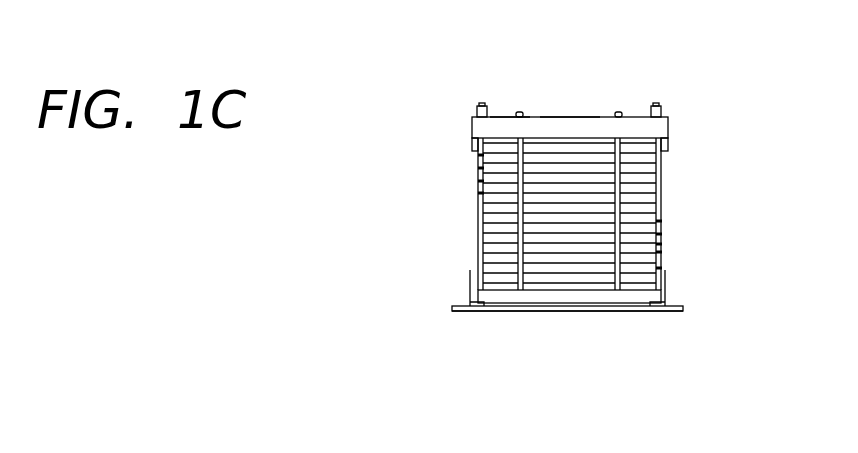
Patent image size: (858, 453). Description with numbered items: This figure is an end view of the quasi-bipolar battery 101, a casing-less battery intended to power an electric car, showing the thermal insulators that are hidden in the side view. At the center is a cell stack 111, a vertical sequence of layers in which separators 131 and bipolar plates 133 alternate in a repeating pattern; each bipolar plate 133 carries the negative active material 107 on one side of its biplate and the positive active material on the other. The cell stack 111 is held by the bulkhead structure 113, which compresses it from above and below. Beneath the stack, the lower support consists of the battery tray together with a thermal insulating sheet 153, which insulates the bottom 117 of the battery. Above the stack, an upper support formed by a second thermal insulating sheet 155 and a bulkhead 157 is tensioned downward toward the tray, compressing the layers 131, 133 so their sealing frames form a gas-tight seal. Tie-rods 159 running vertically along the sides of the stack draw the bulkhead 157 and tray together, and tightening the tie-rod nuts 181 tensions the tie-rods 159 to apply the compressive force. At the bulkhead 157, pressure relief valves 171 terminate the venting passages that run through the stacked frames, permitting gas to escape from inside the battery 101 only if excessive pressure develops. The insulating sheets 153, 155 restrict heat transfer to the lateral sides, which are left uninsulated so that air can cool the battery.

The quasi-bipolar battery 101 is at (430, 294).
The negative active material 107 is at (507, 106).
The cell stack 111 is at (543, 218).
The bulkhead structure 113 is at (705, 138).
The bottom 117 is at (635, 315).
The separator 131 is at (468, 162).
The bipolar plate 133 is at (482, 181).
The thermal insulating sheet 153 is at (522, 298).
The second thermal insulating sheet 155 is at (476, 128).
The bulkhead 157 is at (560, 117).
The tie-rod 159 is at (478, 218).
The pressure relief valve 171 is at (481, 104).
The tie-rod nut 181 is at (618, 113).